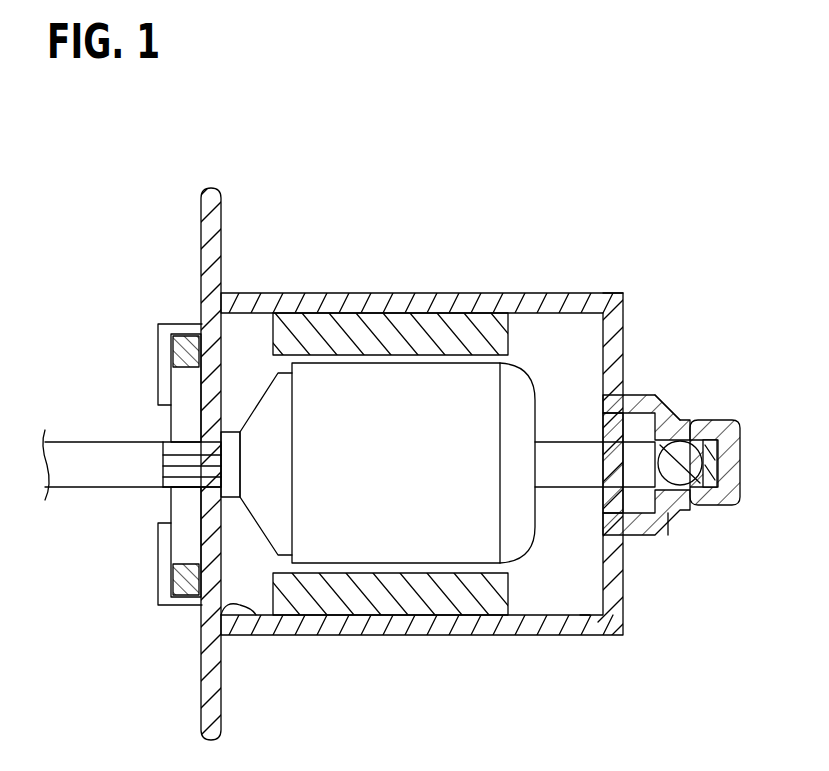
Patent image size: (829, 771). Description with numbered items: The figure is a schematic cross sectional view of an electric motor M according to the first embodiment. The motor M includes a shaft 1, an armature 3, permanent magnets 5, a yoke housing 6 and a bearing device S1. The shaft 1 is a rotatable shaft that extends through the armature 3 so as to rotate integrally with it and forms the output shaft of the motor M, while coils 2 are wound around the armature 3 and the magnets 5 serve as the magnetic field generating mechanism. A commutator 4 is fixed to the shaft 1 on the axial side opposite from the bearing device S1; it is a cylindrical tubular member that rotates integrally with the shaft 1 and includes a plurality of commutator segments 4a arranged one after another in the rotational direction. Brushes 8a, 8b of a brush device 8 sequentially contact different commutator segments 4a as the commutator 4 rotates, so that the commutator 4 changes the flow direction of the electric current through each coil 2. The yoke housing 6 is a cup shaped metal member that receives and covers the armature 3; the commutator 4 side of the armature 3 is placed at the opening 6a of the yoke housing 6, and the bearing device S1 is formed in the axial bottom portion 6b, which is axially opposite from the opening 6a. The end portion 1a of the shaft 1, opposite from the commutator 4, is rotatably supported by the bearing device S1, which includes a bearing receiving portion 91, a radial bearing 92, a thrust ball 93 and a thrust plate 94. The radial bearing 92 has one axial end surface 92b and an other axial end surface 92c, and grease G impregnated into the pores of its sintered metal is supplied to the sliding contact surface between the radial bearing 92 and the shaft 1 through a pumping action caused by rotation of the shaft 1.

The motor M is at (325, 262).
The bearing device S1 is at (656, 352).
The shaft 1 is at (650, 458).
The end portion 1a is at (590, 636).
The coils 2 is at (258, 425).
The armature 3 is at (500, 403).
The commutator 4 is at (145, 512).
The commutator segments 4a is at (160, 470).
The permanent magnets 5 is at (410, 310).
The yoke housing 6 is at (535, 288).
The opening 6a is at (246, 618).
The axial bottom portion 6b is at (592, 395).
The brush device 8 is at (188, 615).
The brush 8a is at (168, 420).
The brush 8b is at (165, 562).
The bearing receiving portion 91 is at (692, 432).
The radial bearing 92 is at (637, 520).
The one axial end surface 92b is at (612, 430).
The other axial end surface 92c is at (667, 400).
The thrust ball 93 is at (690, 488).
The thrust plate 94 is at (740, 462).
The grease G is at (666, 528).